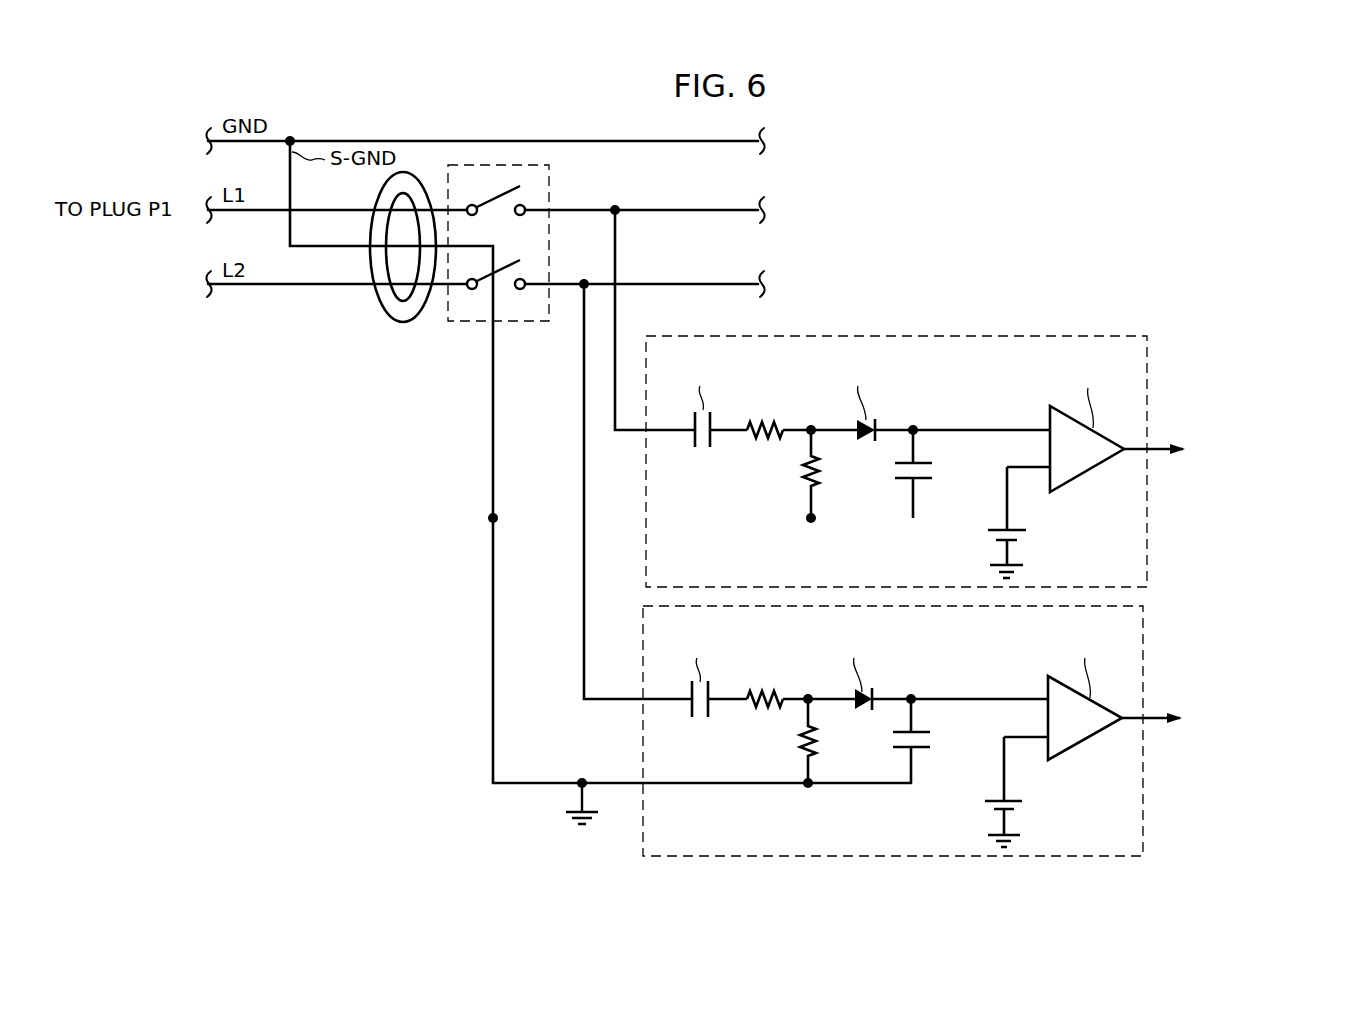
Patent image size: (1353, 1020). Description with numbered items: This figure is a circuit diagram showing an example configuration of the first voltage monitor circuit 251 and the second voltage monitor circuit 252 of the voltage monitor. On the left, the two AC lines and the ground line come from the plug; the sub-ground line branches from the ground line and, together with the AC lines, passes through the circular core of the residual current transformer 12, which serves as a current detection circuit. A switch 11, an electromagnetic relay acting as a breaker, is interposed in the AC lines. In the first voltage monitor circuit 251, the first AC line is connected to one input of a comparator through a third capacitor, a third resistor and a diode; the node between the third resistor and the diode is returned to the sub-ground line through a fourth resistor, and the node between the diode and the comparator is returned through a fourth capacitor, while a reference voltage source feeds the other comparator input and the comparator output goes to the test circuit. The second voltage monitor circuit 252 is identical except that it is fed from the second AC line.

The switch 11 is at (549, 183).
The residual current transformer 12 is at (382, 312).
The first voltage monitor circuit 251 is at (1147, 373).
The second voltage monitor circuit 252 is at (1143, 645).